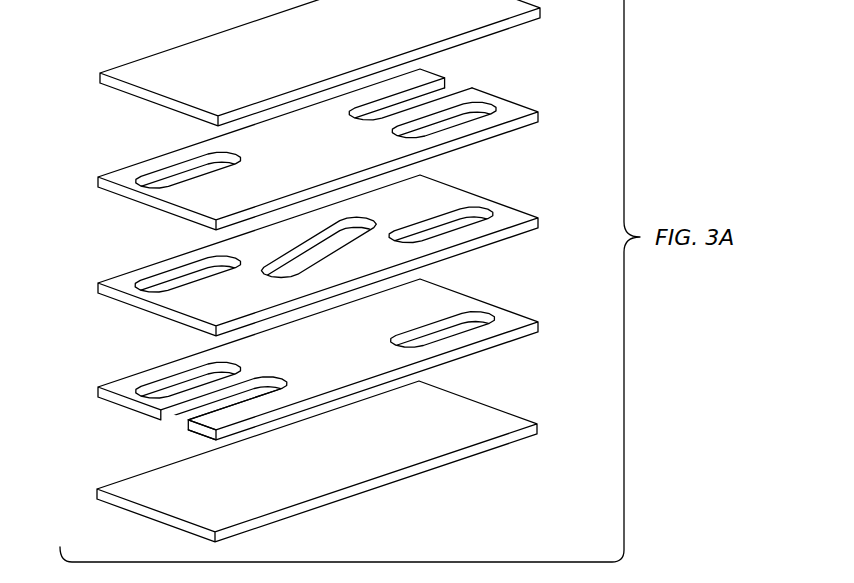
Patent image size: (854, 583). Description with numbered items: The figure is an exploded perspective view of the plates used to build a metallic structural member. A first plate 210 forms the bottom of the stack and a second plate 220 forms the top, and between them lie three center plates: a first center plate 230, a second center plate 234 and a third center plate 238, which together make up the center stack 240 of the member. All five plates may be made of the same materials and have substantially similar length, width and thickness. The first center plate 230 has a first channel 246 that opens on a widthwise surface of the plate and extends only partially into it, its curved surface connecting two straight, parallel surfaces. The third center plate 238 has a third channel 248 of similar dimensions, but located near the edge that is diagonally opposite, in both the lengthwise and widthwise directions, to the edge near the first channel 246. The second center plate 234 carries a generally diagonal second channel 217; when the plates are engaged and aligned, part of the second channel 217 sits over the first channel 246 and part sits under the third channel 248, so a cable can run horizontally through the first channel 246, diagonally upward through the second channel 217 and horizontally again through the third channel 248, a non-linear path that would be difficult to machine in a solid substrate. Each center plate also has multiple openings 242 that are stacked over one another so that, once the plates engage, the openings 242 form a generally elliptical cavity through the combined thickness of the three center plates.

The first plate 210 is at (123, 475).
The second plate 220 is at (123, 57).
The first center plate 230 is at (295, 363).
The second center plate 234 is at (295, 255).
The third center plate 238 is at (295, 135).
The intermediate plate stack 240 is at (337, 244).
The openings 242 is at (496, 88).
The first channel 246 is at (175, 424).
The third channel 248 is at (458, 79).
The second channel 217 is at (306, 268).